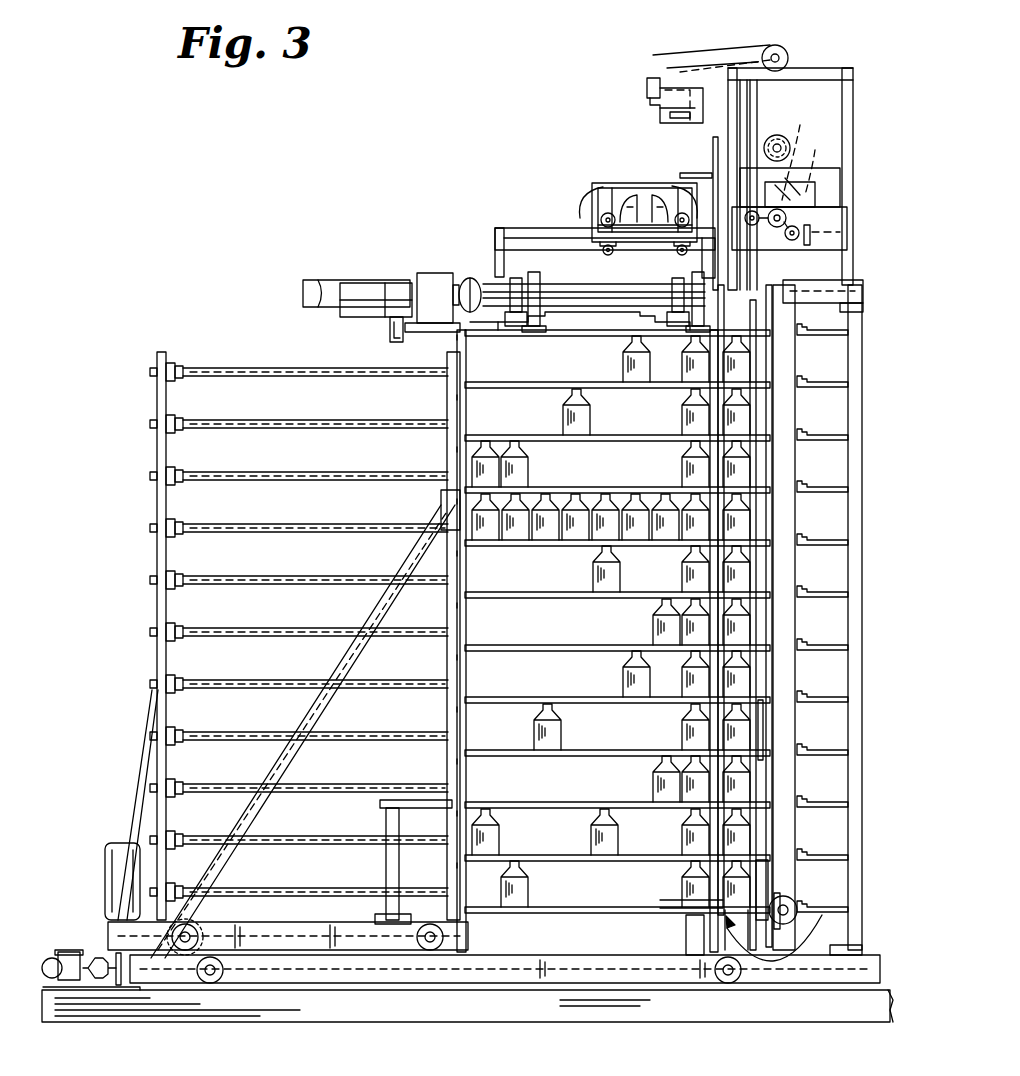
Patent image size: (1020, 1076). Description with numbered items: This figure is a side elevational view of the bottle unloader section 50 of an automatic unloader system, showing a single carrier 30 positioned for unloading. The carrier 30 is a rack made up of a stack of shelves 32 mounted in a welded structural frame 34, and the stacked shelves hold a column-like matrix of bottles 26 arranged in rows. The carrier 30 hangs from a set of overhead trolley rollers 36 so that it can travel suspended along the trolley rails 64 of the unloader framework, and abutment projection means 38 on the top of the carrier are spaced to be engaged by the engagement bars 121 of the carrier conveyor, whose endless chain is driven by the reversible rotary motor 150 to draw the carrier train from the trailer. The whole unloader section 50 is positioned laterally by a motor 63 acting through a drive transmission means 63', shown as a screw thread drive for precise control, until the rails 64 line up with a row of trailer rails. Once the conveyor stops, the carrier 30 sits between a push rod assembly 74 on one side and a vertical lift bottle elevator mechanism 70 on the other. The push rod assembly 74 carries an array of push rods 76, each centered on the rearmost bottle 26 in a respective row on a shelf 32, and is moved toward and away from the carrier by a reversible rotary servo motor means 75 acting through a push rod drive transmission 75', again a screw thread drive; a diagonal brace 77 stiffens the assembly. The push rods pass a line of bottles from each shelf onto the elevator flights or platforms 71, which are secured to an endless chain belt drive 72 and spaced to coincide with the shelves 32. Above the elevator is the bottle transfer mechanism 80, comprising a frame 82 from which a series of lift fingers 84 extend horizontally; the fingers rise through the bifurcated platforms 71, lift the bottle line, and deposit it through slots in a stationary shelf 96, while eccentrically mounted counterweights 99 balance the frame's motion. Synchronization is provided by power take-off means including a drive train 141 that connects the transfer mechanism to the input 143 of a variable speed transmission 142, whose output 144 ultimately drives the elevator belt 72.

The bottles 26 is at (592, 418).
The carrier 30 is at (575, 318).
The shelves 32 is at (462, 318).
The structural frame 34 is at (452, 345).
The trolley rollers 36 is at (478, 278).
The abutment projection means 38 is at (552, 323).
The bottle unloader section 50 is at (413, 208).
The motor 63 is at (76, 954).
The drive transmission means 63' is at (467, 1004).
The trolley rails 64 is at (513, 276).
The vertical lift bottle elevator mechanism 70 is at (810, 522).
The elevator flights or platforms 71 is at (740, 740).
The endless chain belt drive 72 is at (790, 895).
The push rod assembly 74 is at (152, 551).
The reversible rotary servo motor means 75 is at (94, 881).
The push rod drive transmission 75' is at (288, 987).
The push rods 76 is at (240, 425).
The diagonal brace 77 is at (316, 950).
The bottle transfer mechanism 80 is at (552, 195).
The frame 82 is at (618, 183).
The lift fingers 84 is at (698, 173).
The stationary shelf 96 is at (660, 112).
The counterweights 99 is at (590, 195).
The engagement bars 121 is at (612, 310).
The drive train 141 is at (785, 240).
The variable speed transmission 142 is at (815, 195).
The input 143 is at (798, 152).
The output 144 is at (809, 165).
The reversible rotary motor 150 is at (370, 285).